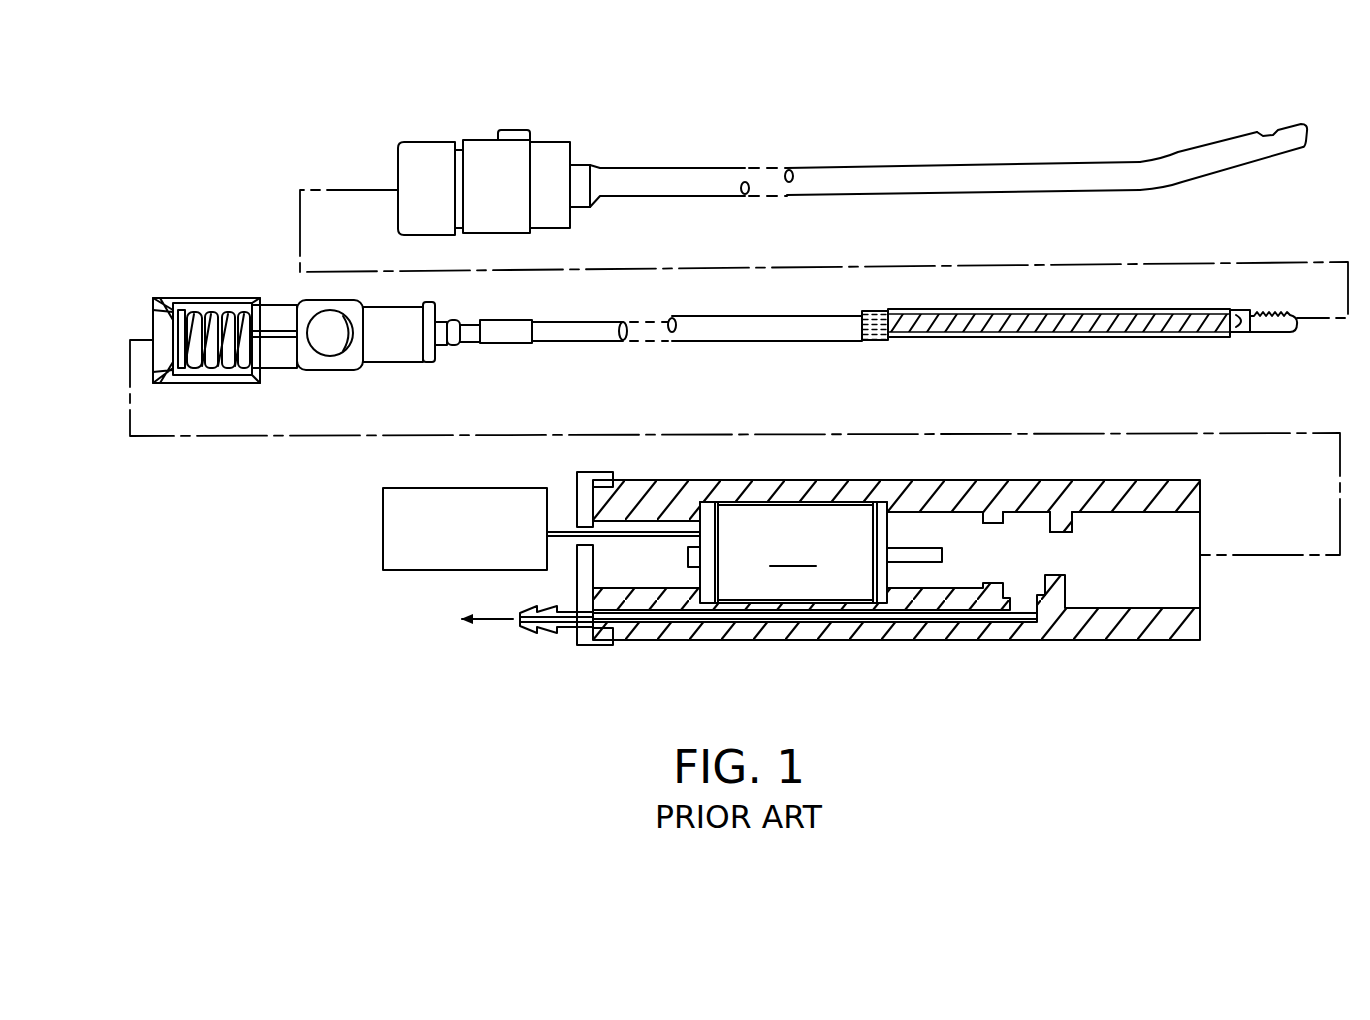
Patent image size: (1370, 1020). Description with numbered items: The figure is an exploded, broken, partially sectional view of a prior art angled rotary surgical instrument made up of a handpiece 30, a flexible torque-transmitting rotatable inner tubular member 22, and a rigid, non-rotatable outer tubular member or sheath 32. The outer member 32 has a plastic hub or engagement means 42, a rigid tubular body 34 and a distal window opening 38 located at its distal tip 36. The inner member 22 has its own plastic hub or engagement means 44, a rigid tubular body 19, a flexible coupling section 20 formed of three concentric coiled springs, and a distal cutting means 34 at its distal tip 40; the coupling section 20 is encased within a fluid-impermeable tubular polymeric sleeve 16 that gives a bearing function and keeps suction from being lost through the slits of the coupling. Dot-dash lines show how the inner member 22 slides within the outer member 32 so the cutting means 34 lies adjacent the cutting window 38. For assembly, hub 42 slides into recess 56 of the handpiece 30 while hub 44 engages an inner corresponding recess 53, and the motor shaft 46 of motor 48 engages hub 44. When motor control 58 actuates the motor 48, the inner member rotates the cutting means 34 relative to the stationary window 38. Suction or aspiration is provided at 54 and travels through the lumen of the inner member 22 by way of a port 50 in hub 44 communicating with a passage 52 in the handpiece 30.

The tubular polymeric sleeve 16 is at (1111, 337).
The rigid tubular body 19 is at (757, 340).
The flexible coupling section 20 is at (975, 346).
The inner tubular member 22 is at (705, 352).
The handpiece 30 is at (820, 637).
The outer tubular member 32 is at (650, 158).
The distal cutting means 34 is at (932, 155).
The distal tip 36 is at (1216, 128).
The distal window opening 38 is at (1283, 127).
The distal tip 40 is at (1274, 338).
The hub 42 is at (530, 141).
The hub 44 is at (324, 378).
The motor shaft 46 is at (917, 547).
The motor 48 is at (787, 552).
The port 50 is at (332, 340).
The passage 52 is at (983, 614).
The inner recess 53 is at (997, 575).
The suction or aspiration 54 is at (305, 610).
The recess 56 is at (1148, 562).
The motor control 58 is at (497, 475).